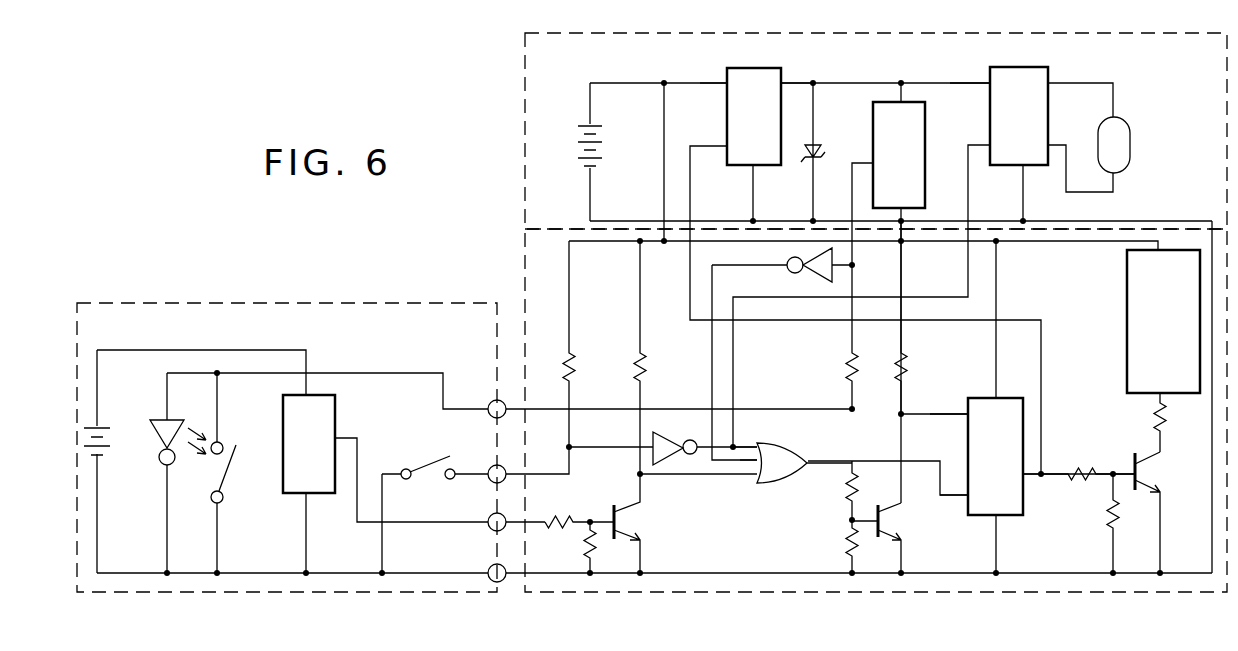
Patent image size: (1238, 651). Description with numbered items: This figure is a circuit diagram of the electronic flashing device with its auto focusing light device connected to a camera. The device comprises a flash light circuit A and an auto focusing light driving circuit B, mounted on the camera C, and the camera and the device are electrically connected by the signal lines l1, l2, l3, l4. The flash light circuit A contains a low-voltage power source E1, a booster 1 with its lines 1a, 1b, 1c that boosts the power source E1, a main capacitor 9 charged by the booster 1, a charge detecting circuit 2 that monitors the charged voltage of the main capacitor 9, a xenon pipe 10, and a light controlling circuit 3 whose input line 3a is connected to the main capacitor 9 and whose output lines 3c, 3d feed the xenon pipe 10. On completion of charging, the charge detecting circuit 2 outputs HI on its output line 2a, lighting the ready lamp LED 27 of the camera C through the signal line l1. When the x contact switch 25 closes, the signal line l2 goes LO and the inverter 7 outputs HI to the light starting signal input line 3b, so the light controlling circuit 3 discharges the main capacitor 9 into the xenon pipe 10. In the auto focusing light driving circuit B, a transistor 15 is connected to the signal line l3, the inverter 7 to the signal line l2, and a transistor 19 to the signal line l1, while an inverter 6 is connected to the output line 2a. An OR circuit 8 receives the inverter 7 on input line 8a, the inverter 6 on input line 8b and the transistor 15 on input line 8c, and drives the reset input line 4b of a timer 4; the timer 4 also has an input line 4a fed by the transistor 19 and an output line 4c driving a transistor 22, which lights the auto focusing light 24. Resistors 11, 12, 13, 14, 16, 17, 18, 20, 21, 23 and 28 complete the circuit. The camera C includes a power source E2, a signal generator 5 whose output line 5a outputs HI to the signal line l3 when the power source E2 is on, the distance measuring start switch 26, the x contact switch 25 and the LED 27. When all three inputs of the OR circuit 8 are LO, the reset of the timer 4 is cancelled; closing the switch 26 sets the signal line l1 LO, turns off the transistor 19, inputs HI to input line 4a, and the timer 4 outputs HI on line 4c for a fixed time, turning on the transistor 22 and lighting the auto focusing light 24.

The flash light circuit A is at (1104, 31).
The auto focusing light driving circuit B is at (734, 588).
The camera C is at (441, 590).
The low-voltage power source E1 is at (578, 136).
The power source E2 is at (115, 430).
The booster 1 is at (766, 68).
The booster input terminal 1a is at (725, 82).
The line 1b is at (727, 148).
The booster output terminal 1c is at (786, 82).
The charge detecting circuit 2 is at (873, 104).
The output line 2a is at (872, 162).
The light controlling circuit 3 is at (1030, 67).
The input line 3a is at (988, 80).
The light starting signal input line 3b is at (988, 146).
The output line 3c is at (1050, 81).
The output line 3d is at (1050, 146).
The timer 4 is at (1010, 516).
The input line 4a is at (949, 403).
The reset input line 4b is at (968, 500).
The output line 4c is at (1026, 476).
The signal generator 5 is at (330, 420).
The output line 5a is at (340, 440).
The inverter 6 is at (832, 276).
The inverter 7 is at (663, 437).
The OR circuit 8 is at (785, 448).
The input line 8a is at (749, 428).
The input line 8b is at (750, 460).
The input line 8c is at (728, 477).
The main capacitor 9 is at (810, 144).
The xenon pipe 10 is at (1122, 148).
The resistor 11 is at (575, 366).
The resistor 12 is at (646, 366).
The resistor 13 is at (565, 514).
The resistor 14 is at (584, 550).
The transistor 15 is at (628, 530).
The resistor 16 is at (846, 487).
The resistor 17 is at (907, 366).
The resistor 18 is at (846, 543).
The transistor 19 is at (888, 525).
The resistor 20 is at (1088, 467).
The resistor 21 is at (1108, 520).
The transistor 22 is at (1132, 461).
The resistor 23 is at (1152, 416).
The auto focusing light 24 is at (1127, 302).
The x contact switch 25 is at (432, 465).
The distance measuring start switch 26 is at (232, 462).
The LED 27 is at (160, 418).
The resistor 28 is at (847, 368).
The signal line l1 is at (490, 404).
The signal line l2 is at (490, 467).
The signal line l3 is at (490, 515).
The signal line l4 is at (490, 566).